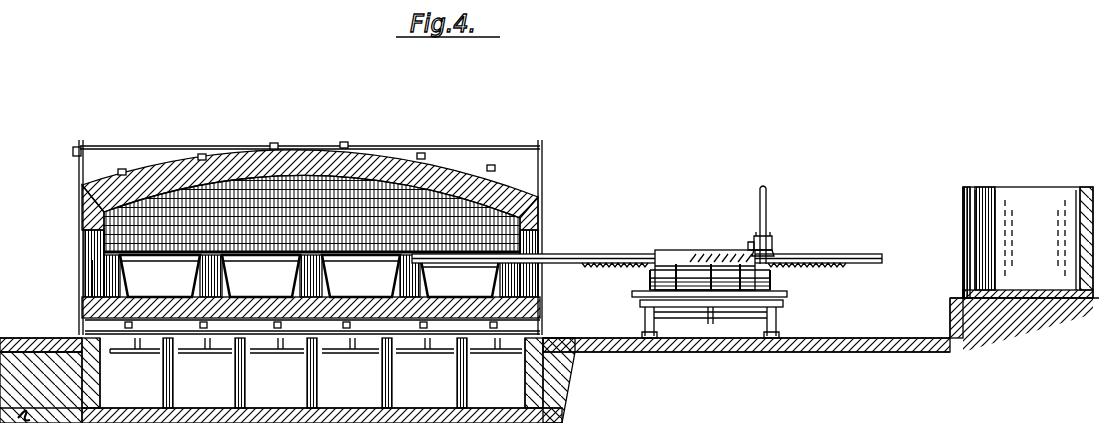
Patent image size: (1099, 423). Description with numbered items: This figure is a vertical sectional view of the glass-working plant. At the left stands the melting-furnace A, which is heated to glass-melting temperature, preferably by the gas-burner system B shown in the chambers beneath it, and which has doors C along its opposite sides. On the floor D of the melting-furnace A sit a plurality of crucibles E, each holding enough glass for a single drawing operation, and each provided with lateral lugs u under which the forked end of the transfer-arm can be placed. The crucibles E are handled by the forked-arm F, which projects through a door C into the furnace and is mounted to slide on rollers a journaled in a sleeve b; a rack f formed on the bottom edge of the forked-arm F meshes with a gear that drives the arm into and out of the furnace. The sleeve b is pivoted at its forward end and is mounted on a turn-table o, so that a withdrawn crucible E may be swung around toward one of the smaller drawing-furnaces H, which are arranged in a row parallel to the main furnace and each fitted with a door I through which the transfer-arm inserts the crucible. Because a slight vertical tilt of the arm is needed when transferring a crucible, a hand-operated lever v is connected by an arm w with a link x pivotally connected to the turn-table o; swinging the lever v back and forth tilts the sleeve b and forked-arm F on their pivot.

The melting-furnace A is at (307, 226).
The gas-burner system B is at (210, 346).
The doors C is at (540, 238).
The floor D is at (300, 320).
The crucibles E is at (312, 276).
The forked-arm F is at (574, 255).
The rack f is at (604, 268).
The lateral lugs u is at (98, 252).
The sleeve b is at (687, 252).
The turn-table o is at (772, 280).
The hand-operated lever v is at (768, 195).
The arm w is at (772, 238).
The link x is at (774, 252).
The rollers a is at (750, 244).
The smaller furnaces H is at (1008, 195).
The door I is at (964, 244).